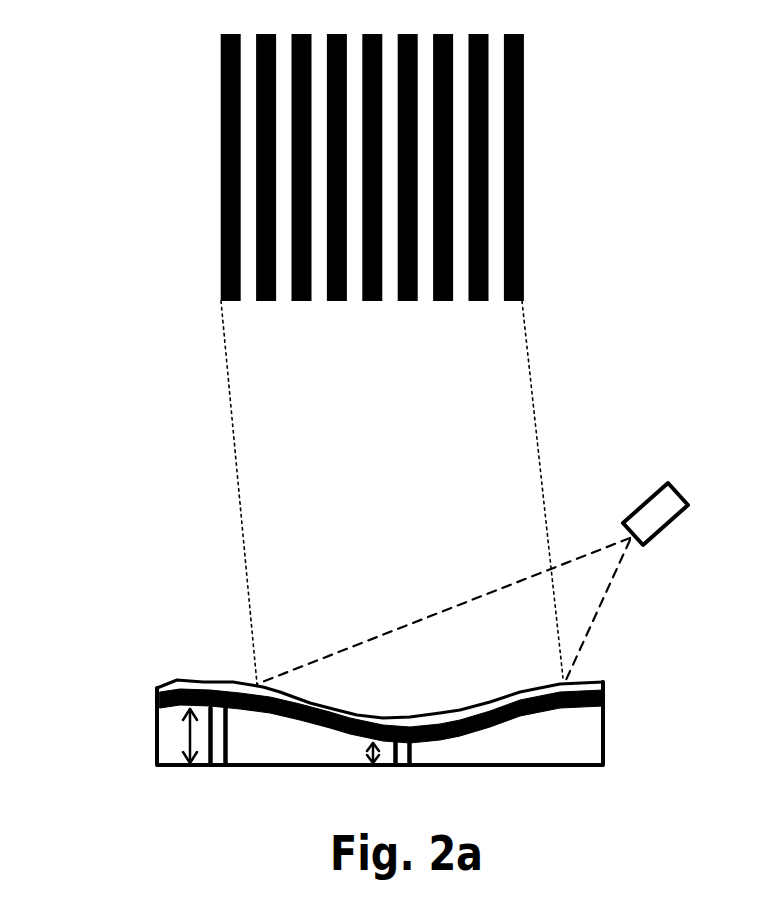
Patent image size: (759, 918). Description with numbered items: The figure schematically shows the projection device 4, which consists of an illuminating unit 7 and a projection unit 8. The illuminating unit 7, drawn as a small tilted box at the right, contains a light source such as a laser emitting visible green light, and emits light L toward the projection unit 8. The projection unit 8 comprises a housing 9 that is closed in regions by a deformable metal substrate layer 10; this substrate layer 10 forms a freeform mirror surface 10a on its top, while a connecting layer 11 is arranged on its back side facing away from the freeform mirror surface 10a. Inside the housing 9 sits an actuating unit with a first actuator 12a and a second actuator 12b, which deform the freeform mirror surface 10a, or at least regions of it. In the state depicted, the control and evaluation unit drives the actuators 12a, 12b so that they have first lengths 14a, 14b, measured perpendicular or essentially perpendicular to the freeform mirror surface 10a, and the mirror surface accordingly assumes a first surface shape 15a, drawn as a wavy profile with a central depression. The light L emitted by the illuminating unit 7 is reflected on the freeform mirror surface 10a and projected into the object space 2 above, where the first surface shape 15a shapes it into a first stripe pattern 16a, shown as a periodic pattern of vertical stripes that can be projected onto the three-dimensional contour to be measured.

The object space 2 is at (354, 167).
The first stripe pattern 16a is at (527, 156).
The light L is at (629, 420).
The illuminating unit 7 is at (676, 516).
The projection device 4 is at (391, 698).
The projection unit 8 is at (404, 749).
The housing 9 is at (593, 767).
The metal substrate layer 10 is at (423, 679).
The freeform mirror surface 10a is at (590, 682).
The connecting layer 11 is at (607, 702).
The first actuator 12a is at (218, 768).
The second actuator 12b is at (401, 768).
The first length 14a is at (198, 733).
The first length 14b is at (368, 752).
The first surface shape 15a is at (397, 695).